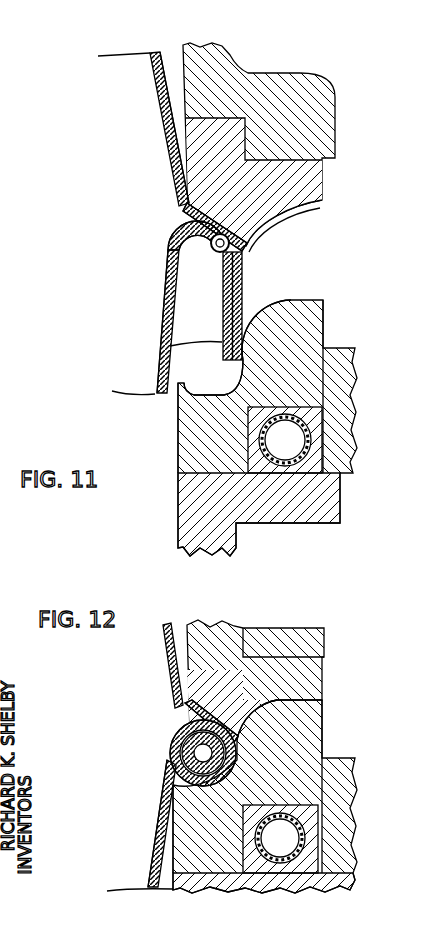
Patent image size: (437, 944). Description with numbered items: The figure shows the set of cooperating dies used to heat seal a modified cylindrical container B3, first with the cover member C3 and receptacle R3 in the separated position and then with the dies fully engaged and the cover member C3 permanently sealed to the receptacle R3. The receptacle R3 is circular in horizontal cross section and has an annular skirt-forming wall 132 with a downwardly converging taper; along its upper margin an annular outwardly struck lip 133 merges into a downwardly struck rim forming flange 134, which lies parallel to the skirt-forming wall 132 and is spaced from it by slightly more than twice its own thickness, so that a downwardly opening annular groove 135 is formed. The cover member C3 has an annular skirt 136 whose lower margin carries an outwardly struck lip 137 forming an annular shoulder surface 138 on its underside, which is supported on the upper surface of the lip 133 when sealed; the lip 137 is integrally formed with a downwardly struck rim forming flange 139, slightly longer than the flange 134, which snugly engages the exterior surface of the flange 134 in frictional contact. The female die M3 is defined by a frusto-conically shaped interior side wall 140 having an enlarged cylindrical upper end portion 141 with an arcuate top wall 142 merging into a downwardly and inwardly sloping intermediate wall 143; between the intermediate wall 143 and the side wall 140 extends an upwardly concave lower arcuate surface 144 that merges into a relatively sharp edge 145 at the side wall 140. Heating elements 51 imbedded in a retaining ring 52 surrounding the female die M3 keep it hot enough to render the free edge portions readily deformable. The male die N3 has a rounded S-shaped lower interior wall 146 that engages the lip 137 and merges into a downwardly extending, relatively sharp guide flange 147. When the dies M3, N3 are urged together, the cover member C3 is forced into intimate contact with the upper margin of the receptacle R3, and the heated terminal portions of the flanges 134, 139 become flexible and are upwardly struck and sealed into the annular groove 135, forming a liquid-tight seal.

In FIG. 11, the heating elements 51 is at (312, 458).
In FIG. 12, the heating elements 51 is at (280, 838).
In FIG. 11, the retaining ring 52 is at (300, 440).
In FIG. 12, the retaining ring 52 is at (280, 839).
In FIG. 11, the skirt-forming wall 132 is at (165, 318).
In FIG. 12, the skirt-forming wall 132 is at (160, 831).
In FIG. 11, the outwardly struck lip 133 is at (180, 228).
In FIG. 12, the outwardly struck lip 133 is at (190, 722).
In FIG. 11, the downwardly struck rim forming flange 134 is at (220, 268).
In FIG. 12, the downwardly struck rim forming flange 134 is at (172, 745).
In FIG. 11, the downwardly opening annular groove 135 is at (205, 249).
In FIG. 11, the annular skirt 136 is at (152, 97).
In FIG. 12, the annular skirt 136 is at (160, 641).
In FIG. 11, the outwardly struck lip 137 is at (249, 226).
In FIG. 11, the annular shoulder surface 138 is at (250, 256).
In FIG. 11, the downwardly struck rim forming flange 139 is at (244, 272).
In FIG. 12, the downwardly struck rim forming flange 139 is at (180, 768).
In FIG. 11, the frusto-conically shaped interior side wall 140 is at (178, 442).
In FIG. 12, the frusto-conically shaped interior side wall 140 is at (175, 853).
In FIG. 11, the cylindrical upper end portion 141 is at (323, 322).
In FIG. 12, the cylindrical upper end portion 141 is at (323, 730).
In FIG. 11, the arcuate top wall 142 is at (291, 300).
In FIG. 12, the arcuate top wall 142 is at (280, 702).
In FIG. 11, the intermediate wall 143 is at (170, 346).
In FIG. 11, the lower arcuate surface 144 is at (178, 393).
In FIG. 11, the sharp edge 145 is at (175, 370).
In FIG. 11, the S-shaped lower interior wall 146 is at (185, 206).
In FIG. 12, the S-shaped lower interior wall 146 is at (180, 707).
In FIG. 11, the guide flange 147 is at (249, 246).
In FIG. 11, the container B3 is at (146, 177).
In FIG. 12, the container B3 is at (150, 808).
In FIG. 11, the cover member C3 is at (148, 74).
In FIG. 11, the male die N3 is at (326, 172).
In FIG. 12, the male die N3 is at (328, 669).
In FIG. 11, the receptacle R3 is at (160, 293).
In FIG. 11, the female die M3 is at (336, 352).
In FIG. 12, the female die M3 is at (333, 752).